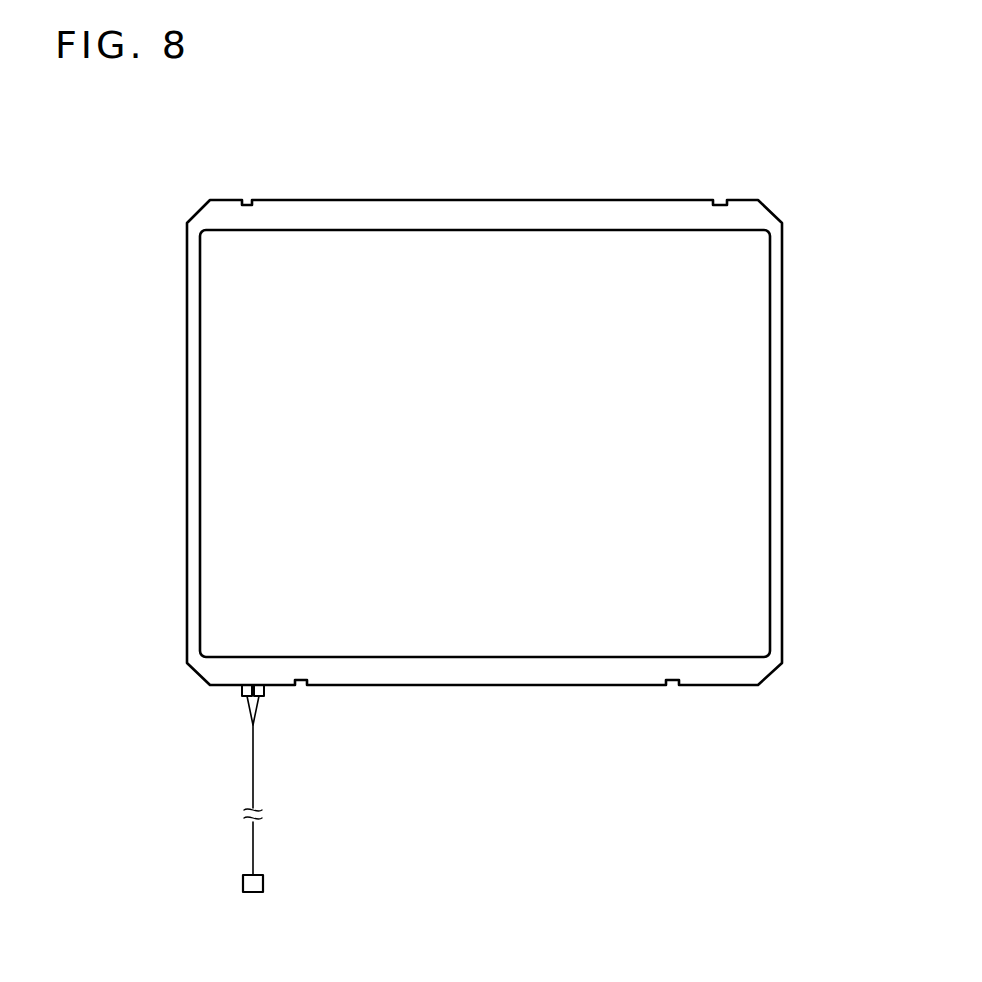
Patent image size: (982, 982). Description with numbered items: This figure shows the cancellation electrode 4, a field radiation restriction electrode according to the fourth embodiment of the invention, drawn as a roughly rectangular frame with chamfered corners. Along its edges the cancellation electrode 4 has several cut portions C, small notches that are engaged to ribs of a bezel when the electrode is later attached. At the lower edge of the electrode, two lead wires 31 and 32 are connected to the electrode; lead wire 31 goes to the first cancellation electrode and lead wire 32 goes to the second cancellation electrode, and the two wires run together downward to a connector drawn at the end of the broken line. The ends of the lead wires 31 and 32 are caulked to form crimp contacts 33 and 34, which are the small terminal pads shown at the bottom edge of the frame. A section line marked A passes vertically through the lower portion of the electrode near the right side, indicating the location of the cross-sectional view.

The cancellation electrode 4 is at (783, 437).
The lead wire 31 is at (249, 725).
The lead wire 32 is at (258, 700).
The crimp contact 33 is at (243, 692).
The crimp contact 34 is at (247, 700).
The cut portions C is at (257, 211).
The section line A is at (636, 713).